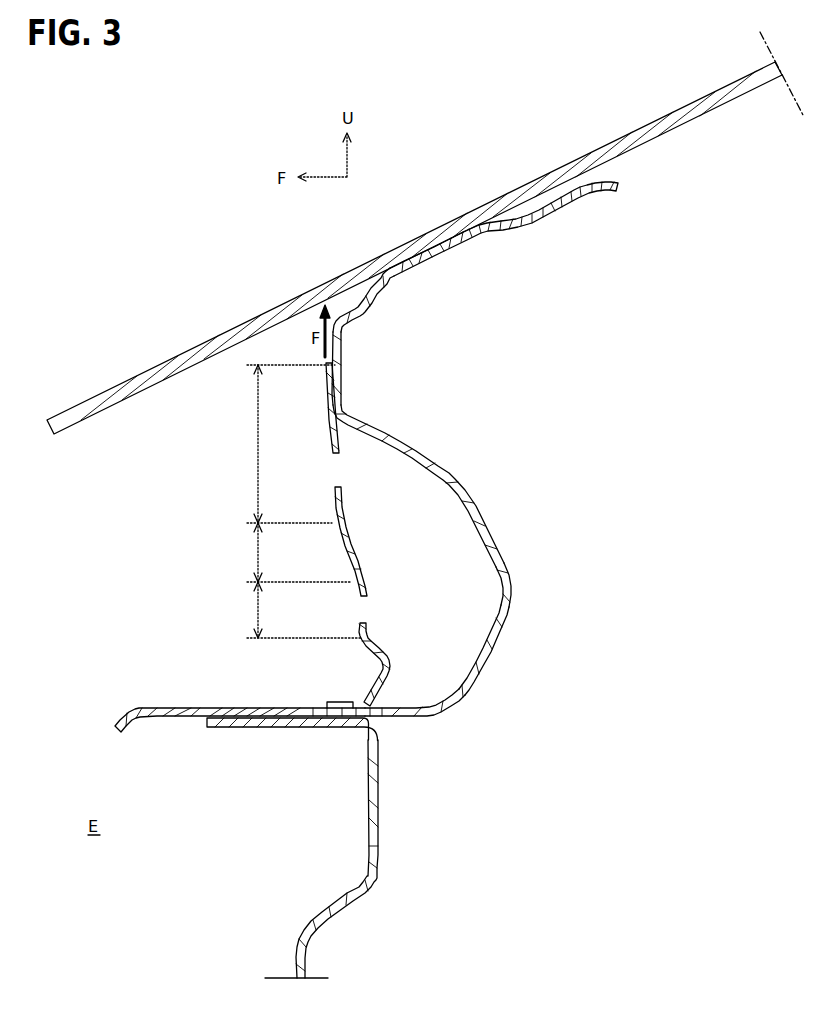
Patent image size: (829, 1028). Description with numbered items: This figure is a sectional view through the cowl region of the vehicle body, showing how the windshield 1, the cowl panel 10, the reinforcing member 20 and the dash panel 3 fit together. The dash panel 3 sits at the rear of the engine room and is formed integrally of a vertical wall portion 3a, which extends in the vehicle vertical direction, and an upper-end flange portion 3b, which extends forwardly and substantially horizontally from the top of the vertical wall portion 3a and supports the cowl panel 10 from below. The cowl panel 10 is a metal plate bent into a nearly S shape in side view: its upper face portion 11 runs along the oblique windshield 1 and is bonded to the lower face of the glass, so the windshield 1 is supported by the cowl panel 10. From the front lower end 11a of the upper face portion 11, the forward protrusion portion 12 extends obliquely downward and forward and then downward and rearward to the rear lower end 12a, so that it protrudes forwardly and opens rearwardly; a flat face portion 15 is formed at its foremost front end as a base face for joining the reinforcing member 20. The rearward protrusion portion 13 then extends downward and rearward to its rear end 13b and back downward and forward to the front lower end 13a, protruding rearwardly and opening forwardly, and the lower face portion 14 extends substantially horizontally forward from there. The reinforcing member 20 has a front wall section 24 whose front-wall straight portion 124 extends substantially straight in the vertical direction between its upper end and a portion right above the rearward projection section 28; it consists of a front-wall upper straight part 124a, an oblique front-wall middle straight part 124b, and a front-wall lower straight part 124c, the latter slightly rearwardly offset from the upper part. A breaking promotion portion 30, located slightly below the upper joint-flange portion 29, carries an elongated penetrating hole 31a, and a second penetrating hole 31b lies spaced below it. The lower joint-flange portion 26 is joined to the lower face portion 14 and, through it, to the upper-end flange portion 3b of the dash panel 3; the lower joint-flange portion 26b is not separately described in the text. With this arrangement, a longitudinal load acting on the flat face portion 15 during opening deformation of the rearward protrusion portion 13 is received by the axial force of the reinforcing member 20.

The windshield 1 is at (225, 332).
The dash panel 3 is at (331, 848).
The vertical wall portion 3a is at (378, 813).
The upper-end flange portion 3b is at (260, 727).
The cowl panel 10 is at (475, 476).
The upper face portion 11 is at (432, 262).
The front lower end of the upper face portion 11a is at (368, 308).
The forward protrusion portion 12 is at (348, 357).
The rear lower end of the forward protrusion portion 12a is at (388, 433).
The rearward protrusion portion 13 is at (495, 648).
The front lower end of the rearward protrusion portion 13a is at (418, 723).
The rear end of the rearward protrusion portion 13b is at (510, 583).
The lower face portion 14 is at (193, 707).
The flat face portion 15 is at (322, 377).
The reinforcing member 20 is at (359, 522).
The front wall section 24 is at (382, 541).
The lower joint-flange portion 26 is at (340, 702).
The base projection 26b is at (290, 689).
The rearward projection section 28 is at (368, 663).
The upper joint-flange portion 29 is at (327, 387).
The breaking promotion portion 30 is at (316, 461).
The penetrating hole 31a is at (351, 478).
The penetrating hole 31b is at (379, 621).
The front-wall straight portion 124 is at (250, 501).
The front-wall upper straight part 124a is at (199, 440).
The front-wall middle straight part 124b is at (199, 552).
The front-wall lower straight part 124c is at (230, 610).